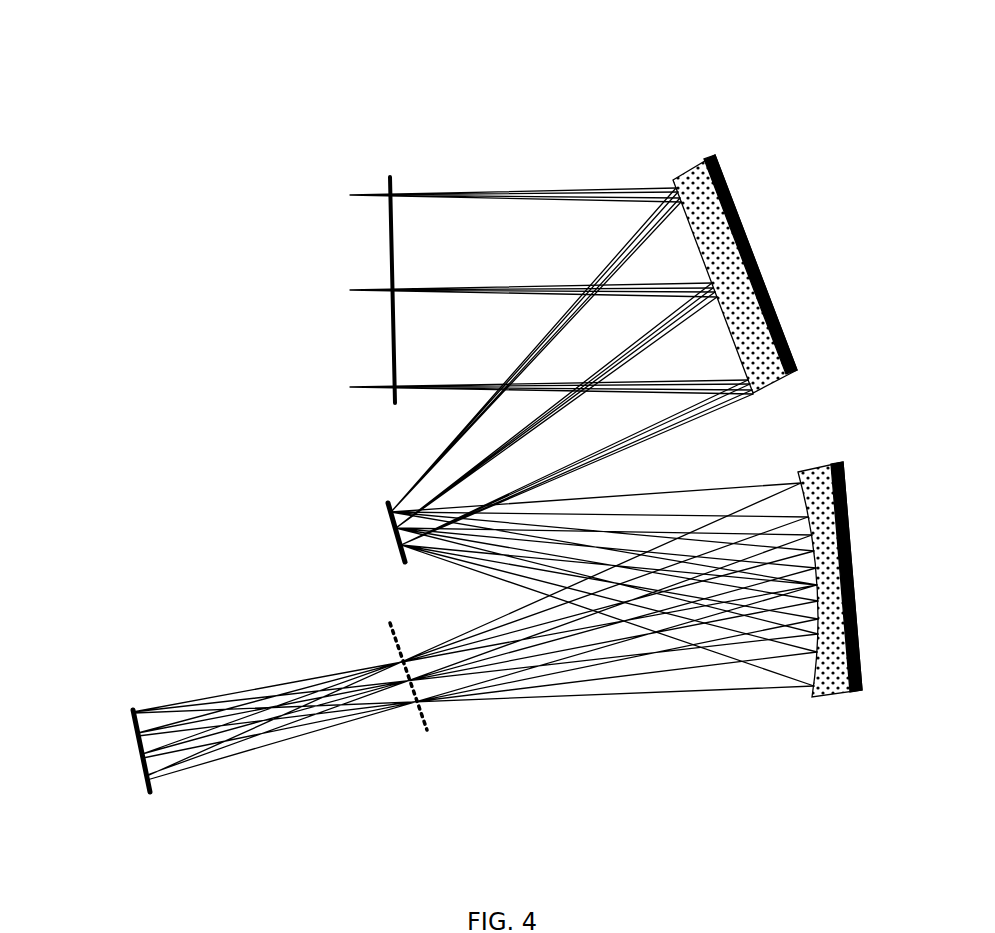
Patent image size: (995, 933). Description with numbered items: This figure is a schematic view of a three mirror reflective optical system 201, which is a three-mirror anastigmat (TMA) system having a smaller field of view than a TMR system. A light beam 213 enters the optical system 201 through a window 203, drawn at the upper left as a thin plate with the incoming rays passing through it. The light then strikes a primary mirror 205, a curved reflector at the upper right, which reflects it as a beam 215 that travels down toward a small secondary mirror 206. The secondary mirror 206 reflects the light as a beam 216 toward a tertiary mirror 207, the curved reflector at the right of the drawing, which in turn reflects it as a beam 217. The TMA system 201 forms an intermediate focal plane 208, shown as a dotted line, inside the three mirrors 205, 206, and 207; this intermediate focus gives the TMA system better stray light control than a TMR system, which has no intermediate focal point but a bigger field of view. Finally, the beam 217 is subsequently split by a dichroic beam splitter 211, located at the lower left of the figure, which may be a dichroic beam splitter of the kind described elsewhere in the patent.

The optical system 201 is at (807, 69).
The window 203 is at (392, 181).
The primary mirror 205 is at (763, 245).
The secondary mirror 206 is at (383, 517).
The tertiary mirror 207 is at (866, 548).
The intermediate focal plane 208 is at (390, 637).
The dichroic beam splitter 211 is at (130, 727).
The light beam 213 is at (559, 182).
The beam 215 is at (635, 453).
The beam 216 is at (748, 491).
The beam 217 is at (637, 693).